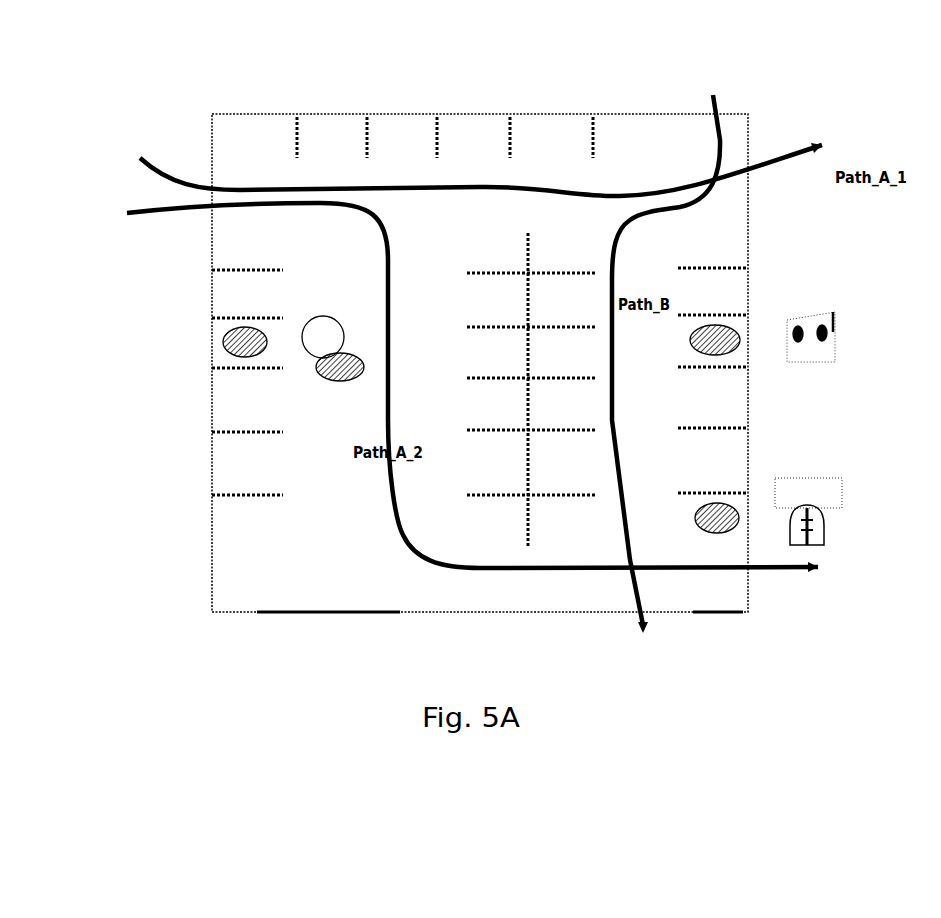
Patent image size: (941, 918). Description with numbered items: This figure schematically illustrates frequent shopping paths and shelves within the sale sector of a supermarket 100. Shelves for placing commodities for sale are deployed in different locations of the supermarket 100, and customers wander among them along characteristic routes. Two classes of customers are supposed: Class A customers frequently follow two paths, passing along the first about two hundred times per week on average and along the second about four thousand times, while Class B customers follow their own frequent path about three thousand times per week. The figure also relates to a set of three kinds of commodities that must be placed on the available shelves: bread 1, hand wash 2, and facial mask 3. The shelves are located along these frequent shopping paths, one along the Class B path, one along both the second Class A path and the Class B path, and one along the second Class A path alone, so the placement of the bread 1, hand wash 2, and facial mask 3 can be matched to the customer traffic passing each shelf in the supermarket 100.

The supermarket 100 is at (480, 341).
The bread 1 is at (333, 365).
The hand wash 2 is at (811, 362).
The facial mask 3 is at (826, 511).